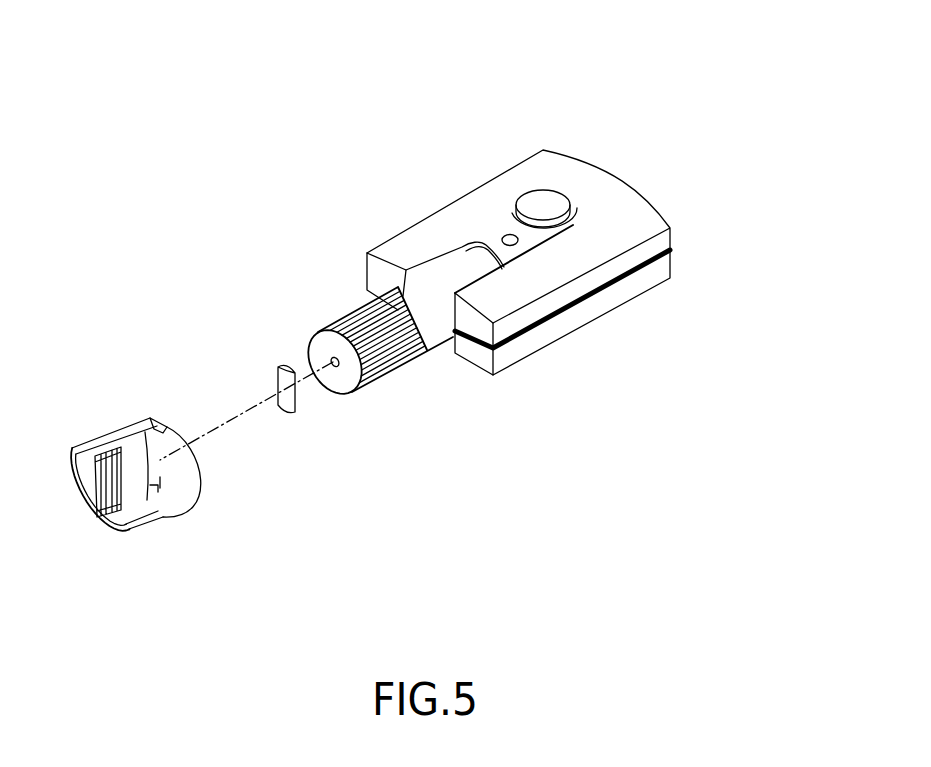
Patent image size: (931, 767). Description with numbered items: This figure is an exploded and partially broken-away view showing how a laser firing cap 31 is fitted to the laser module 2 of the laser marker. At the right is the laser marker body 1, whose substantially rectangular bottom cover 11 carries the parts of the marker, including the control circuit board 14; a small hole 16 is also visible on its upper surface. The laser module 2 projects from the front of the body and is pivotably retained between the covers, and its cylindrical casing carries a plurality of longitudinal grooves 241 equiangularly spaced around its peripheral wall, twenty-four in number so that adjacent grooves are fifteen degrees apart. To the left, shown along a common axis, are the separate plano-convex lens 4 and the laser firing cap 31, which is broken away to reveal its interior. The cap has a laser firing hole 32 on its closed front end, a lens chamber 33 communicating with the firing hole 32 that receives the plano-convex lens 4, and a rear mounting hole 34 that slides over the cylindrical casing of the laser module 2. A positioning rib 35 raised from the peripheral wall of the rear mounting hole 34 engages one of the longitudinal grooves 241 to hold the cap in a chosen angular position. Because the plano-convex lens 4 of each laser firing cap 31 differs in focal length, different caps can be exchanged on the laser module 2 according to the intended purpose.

The laser marker body 1 is at (550, 202).
The bottom cover 11 is at (641, 279).
The control circuit board 14 is at (540, 198).
The hole 16 is at (508, 236).
The laser module 2 is at (339, 319).
The longitudinal grooves 241 is at (392, 373).
The plano-convex lens 4 is at (297, 407).
The laser firing cap 31 is at (156, 471).
The laser firing hole 32 is at (97, 508).
The lens chamber 33 is at (135, 518).
The rear mounting hole 34 is at (140, 482).
The positioning rib 35 is at (160, 427).